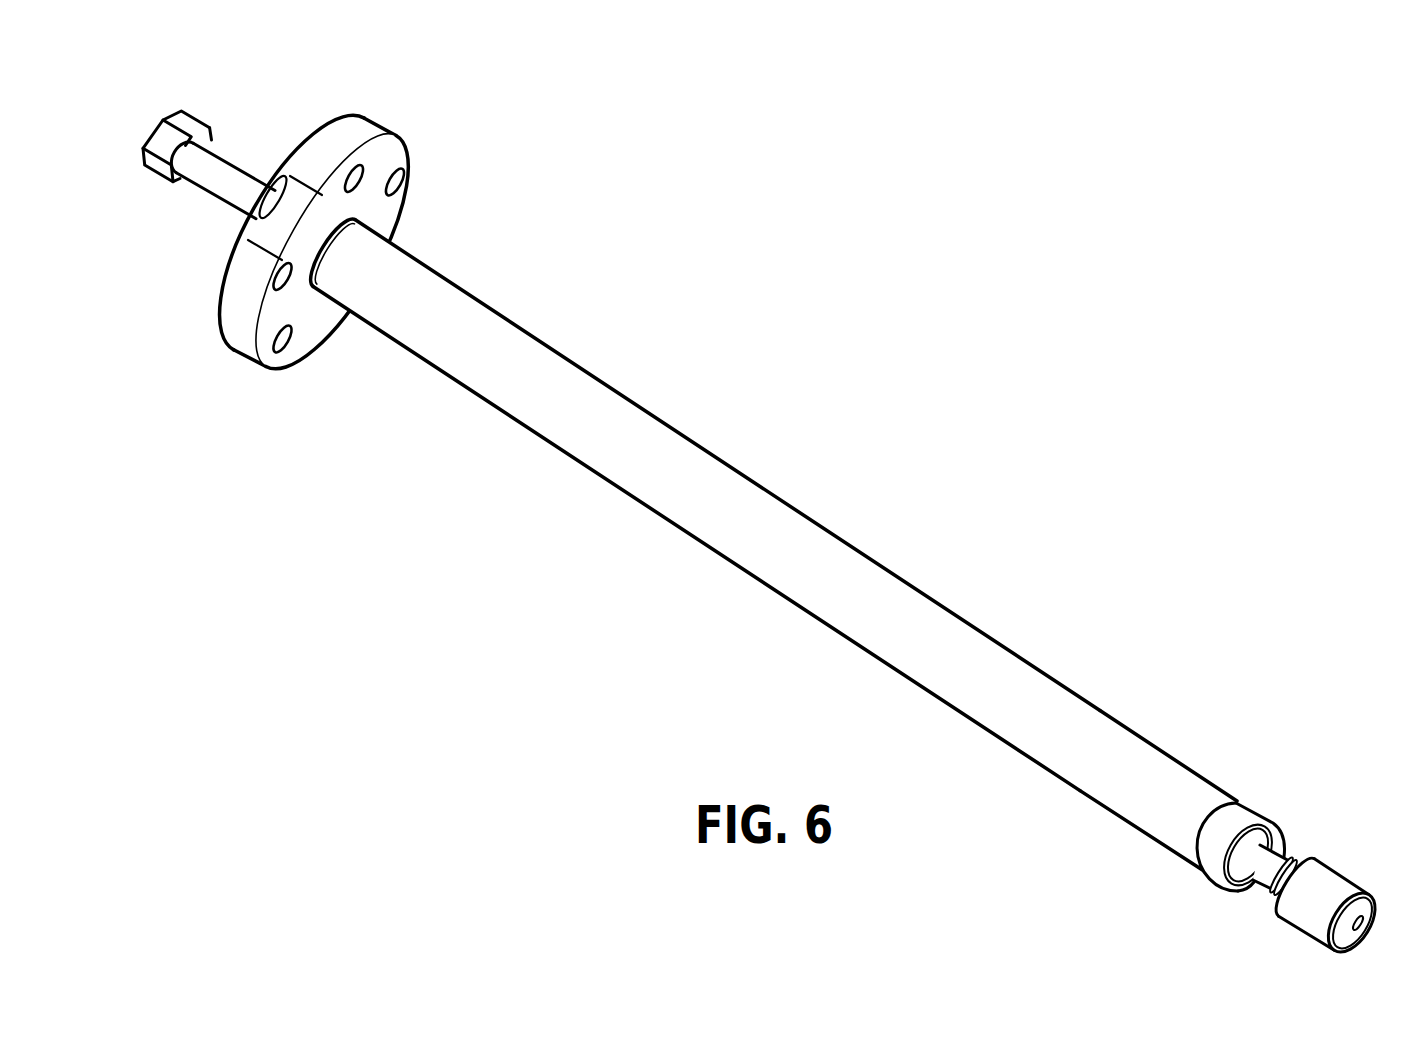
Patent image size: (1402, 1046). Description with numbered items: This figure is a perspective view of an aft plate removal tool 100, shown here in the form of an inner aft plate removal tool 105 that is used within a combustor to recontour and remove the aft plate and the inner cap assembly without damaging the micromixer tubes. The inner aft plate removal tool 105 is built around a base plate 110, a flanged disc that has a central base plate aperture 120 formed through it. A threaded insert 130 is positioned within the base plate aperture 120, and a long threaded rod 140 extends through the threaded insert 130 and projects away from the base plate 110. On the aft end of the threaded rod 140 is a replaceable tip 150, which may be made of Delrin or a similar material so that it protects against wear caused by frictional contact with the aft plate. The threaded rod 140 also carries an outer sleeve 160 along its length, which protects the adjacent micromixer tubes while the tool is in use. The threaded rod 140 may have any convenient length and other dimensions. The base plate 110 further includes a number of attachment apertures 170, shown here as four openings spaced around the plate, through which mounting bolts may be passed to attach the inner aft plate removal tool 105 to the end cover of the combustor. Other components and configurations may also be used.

The aft plate removal tool 100 is at (739, 498).
The inner aft plate removal tool 105 is at (397, 100).
The base plate 110 is at (406, 138).
The base plate aperture 120 is at (354, 219).
The threaded insert 130 is at (248, 225).
The threaded rod 140 is at (224, 167).
The replaceable tip 150 is at (1334, 875).
The outer sleeve 160 is at (1121, 721).
The attachment apertures 170 is at (277, 289).